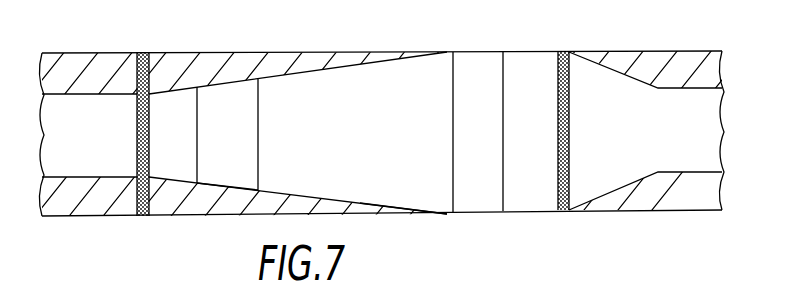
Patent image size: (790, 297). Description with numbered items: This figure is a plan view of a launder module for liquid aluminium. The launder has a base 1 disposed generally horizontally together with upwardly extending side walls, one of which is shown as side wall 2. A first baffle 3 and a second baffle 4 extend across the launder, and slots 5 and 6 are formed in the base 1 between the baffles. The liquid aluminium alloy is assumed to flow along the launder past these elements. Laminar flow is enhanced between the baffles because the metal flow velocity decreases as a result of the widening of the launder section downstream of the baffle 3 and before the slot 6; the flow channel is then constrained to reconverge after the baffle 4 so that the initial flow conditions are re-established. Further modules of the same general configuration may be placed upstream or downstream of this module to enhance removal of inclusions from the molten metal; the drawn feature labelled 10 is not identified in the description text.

The tubular pipe section 1 is at (75, 167).
The lining wall 2 is at (104, 64).
The adhesive joint band 3 is at (150, 75).
The adhesive joint band 4 is at (568, 88).
The sleeve 5 is at (220, 175).
The inner tube 6 is at (473, 202).
The tapered section 10 is at (382, 203).